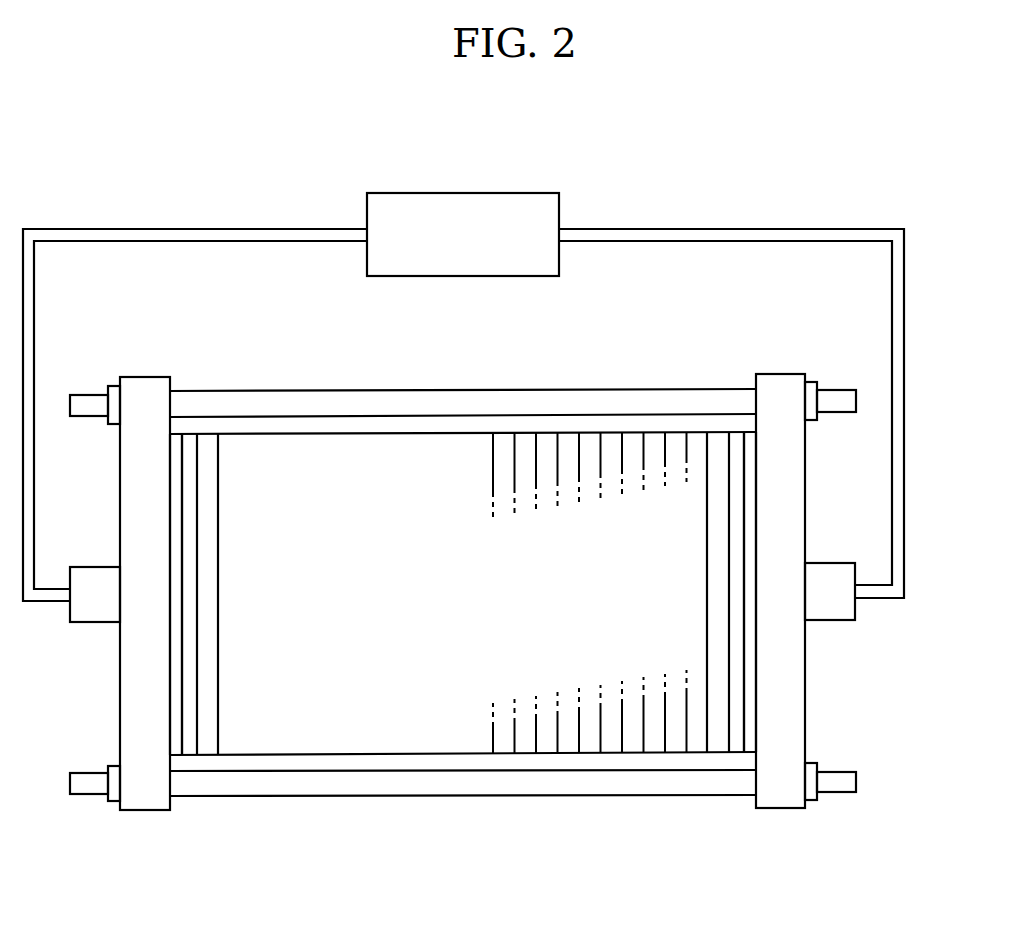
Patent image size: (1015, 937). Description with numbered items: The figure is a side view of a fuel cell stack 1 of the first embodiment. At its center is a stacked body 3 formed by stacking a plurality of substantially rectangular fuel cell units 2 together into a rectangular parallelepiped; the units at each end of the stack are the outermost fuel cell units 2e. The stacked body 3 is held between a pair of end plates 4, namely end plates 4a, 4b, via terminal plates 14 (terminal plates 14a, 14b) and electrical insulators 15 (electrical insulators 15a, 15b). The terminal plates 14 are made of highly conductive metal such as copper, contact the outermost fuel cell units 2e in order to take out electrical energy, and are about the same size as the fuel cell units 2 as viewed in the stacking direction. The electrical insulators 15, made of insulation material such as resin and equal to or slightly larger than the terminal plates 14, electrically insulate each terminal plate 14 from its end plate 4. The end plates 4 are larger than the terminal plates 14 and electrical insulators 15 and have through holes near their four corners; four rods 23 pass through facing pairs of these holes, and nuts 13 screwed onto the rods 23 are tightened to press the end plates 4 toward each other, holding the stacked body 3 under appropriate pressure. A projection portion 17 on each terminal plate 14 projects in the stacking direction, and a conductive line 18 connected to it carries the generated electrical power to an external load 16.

The fuel cell stack 1 is at (706, 328).
The fuel cell units 2 is at (463, 601).
The outermost fuel cell units 2e is at (207, 742).
The stacked body 3 is at (508, 764).
The end plates 4 is at (484, 559).
The end plate 4a is at (788, 387).
The end plate 4b is at (143, 387).
The nuts 13 is at (112, 801).
The terminal plates 14 is at (464, 666).
The terminal plate 14a is at (740, 743).
The terminal plate 14b is at (190, 747).
The electrical insulators 15 is at (503, 519).
The electrical insulator 15a is at (753, 440).
The electrical insulator 15b is at (178, 442).
The external load 16 is at (513, 193).
The projection portion 17 is at (83, 622).
The conductive line 18 is at (904, 446).
The rods 23 is at (432, 402).